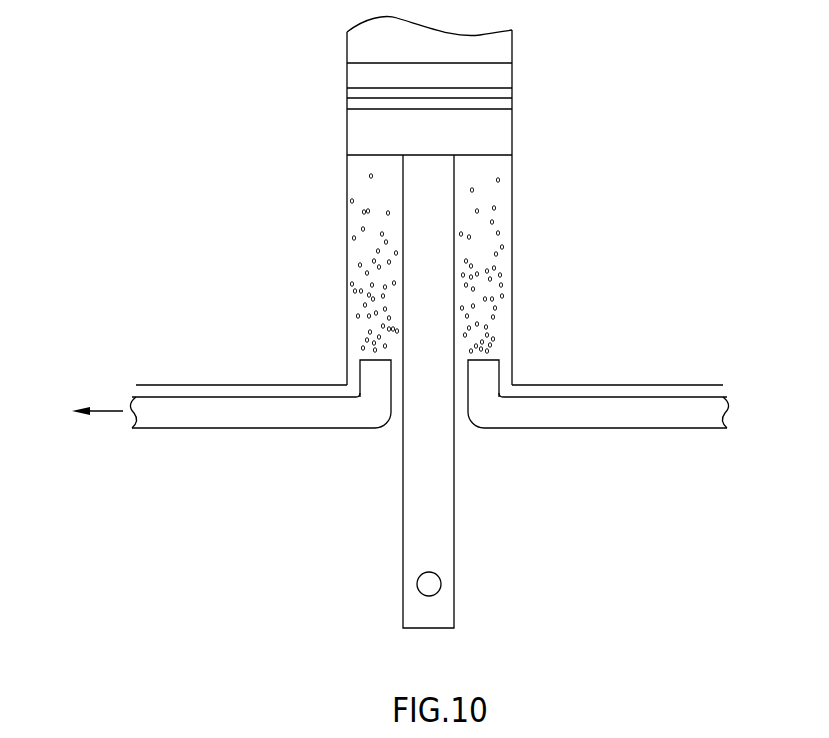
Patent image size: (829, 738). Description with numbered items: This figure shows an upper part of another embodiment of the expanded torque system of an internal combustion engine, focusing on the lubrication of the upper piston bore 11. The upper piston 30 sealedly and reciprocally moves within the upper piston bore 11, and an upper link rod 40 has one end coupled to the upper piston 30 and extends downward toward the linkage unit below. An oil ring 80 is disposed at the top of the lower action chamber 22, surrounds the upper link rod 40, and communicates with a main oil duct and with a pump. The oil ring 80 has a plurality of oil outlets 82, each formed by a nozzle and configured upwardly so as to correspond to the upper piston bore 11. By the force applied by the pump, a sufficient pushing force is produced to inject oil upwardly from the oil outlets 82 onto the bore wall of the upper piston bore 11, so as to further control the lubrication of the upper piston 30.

The upper piston bore 11 is at (347, 245).
The lower action chamber 22 is at (650, 390).
The upper piston 30 is at (505, 127).
The upper link rod 40 is at (443, 260).
The oil ring 80 is at (571, 450).
The oil outlet 82 is at (373, 368).